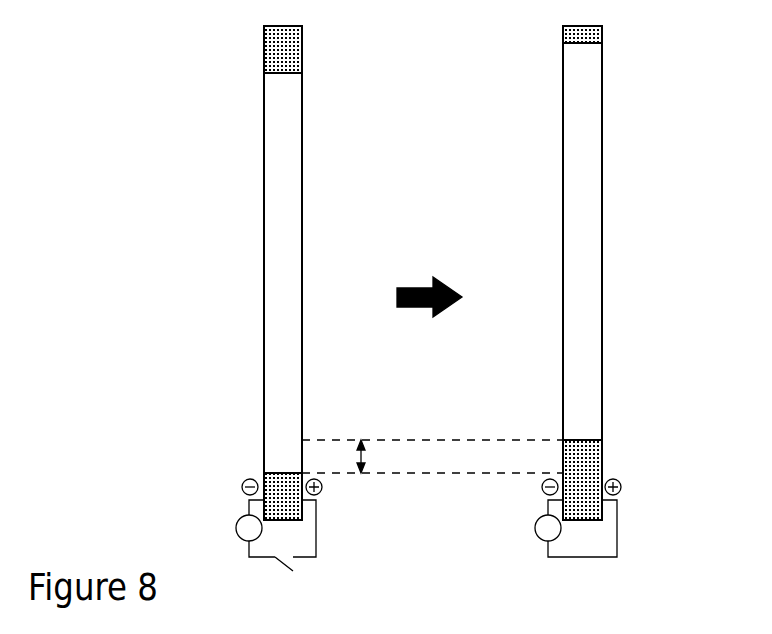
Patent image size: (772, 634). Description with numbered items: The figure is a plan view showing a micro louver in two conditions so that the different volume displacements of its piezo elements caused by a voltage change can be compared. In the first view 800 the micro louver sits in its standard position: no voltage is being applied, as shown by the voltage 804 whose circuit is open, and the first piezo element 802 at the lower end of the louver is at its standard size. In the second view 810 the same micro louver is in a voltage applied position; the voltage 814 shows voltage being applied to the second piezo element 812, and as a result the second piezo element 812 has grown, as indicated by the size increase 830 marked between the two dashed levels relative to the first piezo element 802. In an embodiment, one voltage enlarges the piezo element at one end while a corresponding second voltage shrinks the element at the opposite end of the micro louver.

The first view 800 is at (221, 271).
The first piezo element 802 is at (270, 478).
The voltage 804 is at (285, 565).
The second view 810 is at (646, 271).
The second piezo element 812 is at (593, 458).
The voltage 814 is at (617, 528).
The size increase 830 is at (363, 458).